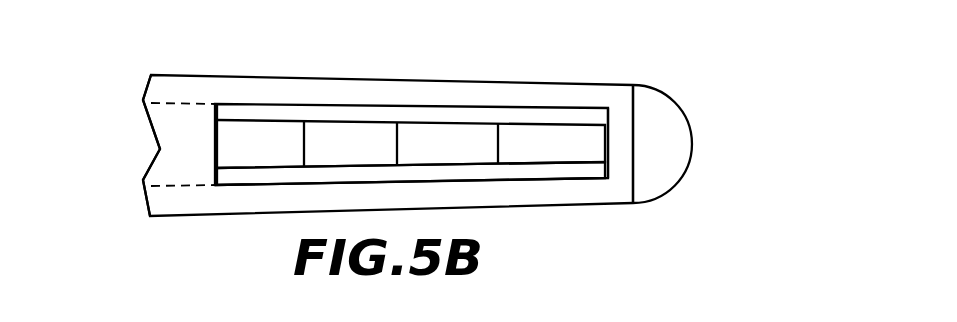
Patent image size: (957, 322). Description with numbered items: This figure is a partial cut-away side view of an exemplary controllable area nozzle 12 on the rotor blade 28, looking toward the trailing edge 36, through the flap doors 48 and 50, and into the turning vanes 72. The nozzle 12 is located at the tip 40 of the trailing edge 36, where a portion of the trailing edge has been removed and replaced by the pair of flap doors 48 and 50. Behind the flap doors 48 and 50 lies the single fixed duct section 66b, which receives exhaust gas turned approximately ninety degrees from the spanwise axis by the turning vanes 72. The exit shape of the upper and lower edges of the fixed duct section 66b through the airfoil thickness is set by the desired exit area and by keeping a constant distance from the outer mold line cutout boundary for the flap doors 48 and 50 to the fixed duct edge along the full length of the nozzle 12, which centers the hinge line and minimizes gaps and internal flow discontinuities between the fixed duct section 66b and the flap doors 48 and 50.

The controllable area nozzle 12 is at (615, 228).
The rotor blade 28 is at (78, 62).
The trailing edge 36 is at (140, 146).
The tip 40 is at (778, 150).
The flap door 48 is at (359, 111).
The flap door 50 is at (294, 178).
The fixed duct section 66b is at (630, 130).
The turning vanes 72 is at (302, 145).